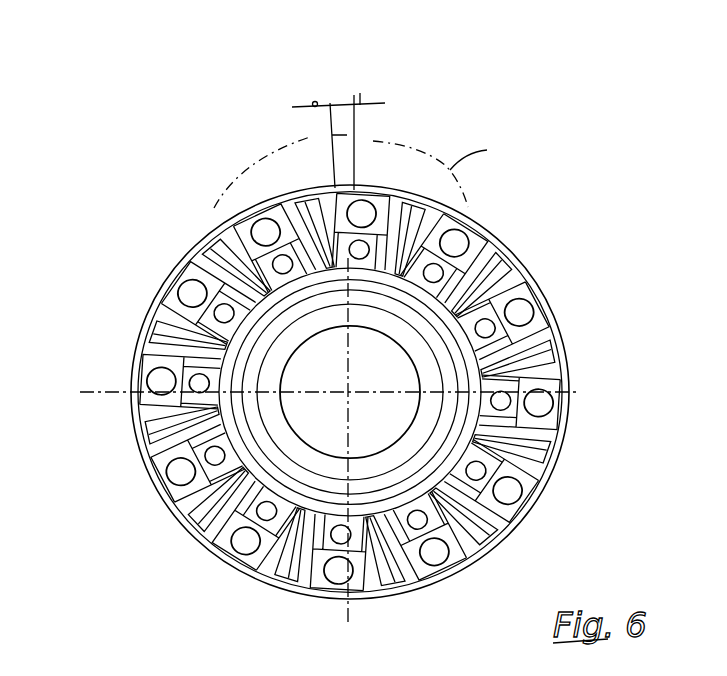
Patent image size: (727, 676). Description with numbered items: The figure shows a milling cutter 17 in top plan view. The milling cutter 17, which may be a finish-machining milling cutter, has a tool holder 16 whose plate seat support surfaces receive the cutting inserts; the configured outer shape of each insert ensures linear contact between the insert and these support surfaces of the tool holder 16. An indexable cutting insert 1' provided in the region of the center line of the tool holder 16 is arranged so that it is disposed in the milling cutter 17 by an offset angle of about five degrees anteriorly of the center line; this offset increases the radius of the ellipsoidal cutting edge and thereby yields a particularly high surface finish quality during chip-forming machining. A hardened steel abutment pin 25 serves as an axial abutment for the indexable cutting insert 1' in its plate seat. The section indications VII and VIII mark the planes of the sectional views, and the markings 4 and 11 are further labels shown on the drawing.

The pipe section 4 is at (377, 100).
The connecting tube 11 is at (360, 120).
The indexable cutting insert 1' is at (390, 324).
The tool holder 16 is at (567, 352).
The milling cutter 17 is at (619, 230).
The abutment pin 25 is at (510, 280).
The section line VII is at (92, 392).
The section line VIII is at (555, 162).